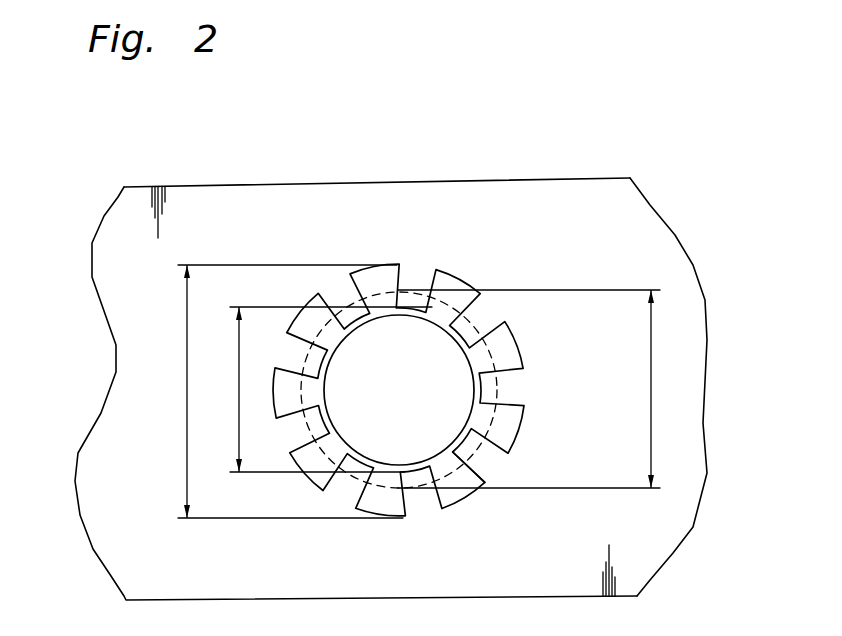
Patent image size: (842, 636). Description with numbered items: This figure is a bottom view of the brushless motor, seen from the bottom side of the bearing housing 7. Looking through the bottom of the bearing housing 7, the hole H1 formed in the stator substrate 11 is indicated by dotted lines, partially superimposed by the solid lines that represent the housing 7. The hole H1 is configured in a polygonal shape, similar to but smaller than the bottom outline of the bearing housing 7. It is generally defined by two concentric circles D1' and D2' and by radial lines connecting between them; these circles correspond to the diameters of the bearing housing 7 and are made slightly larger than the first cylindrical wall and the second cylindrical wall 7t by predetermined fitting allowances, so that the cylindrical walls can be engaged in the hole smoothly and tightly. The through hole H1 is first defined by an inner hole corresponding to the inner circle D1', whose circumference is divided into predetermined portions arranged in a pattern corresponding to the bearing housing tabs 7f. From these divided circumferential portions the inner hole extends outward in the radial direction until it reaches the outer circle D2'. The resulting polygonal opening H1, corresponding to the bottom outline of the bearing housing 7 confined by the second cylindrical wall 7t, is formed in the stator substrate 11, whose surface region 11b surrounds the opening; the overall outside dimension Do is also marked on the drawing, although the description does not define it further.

The bearing housing 7 is at (366, 258).
The second cylindrical wall 7t is at (458, 288).
The bearing housing tab 7f is at (453, 495).
The stator substrate 11 is at (514, 176).
The toothed hole in plate 11b is at (602, 193).
The hole H1 is at (486, 345).
The outer diameter Do is at (273, 391).
The inner circle D1' is at (314, 389).
The outer circle D2' is at (553, 389).